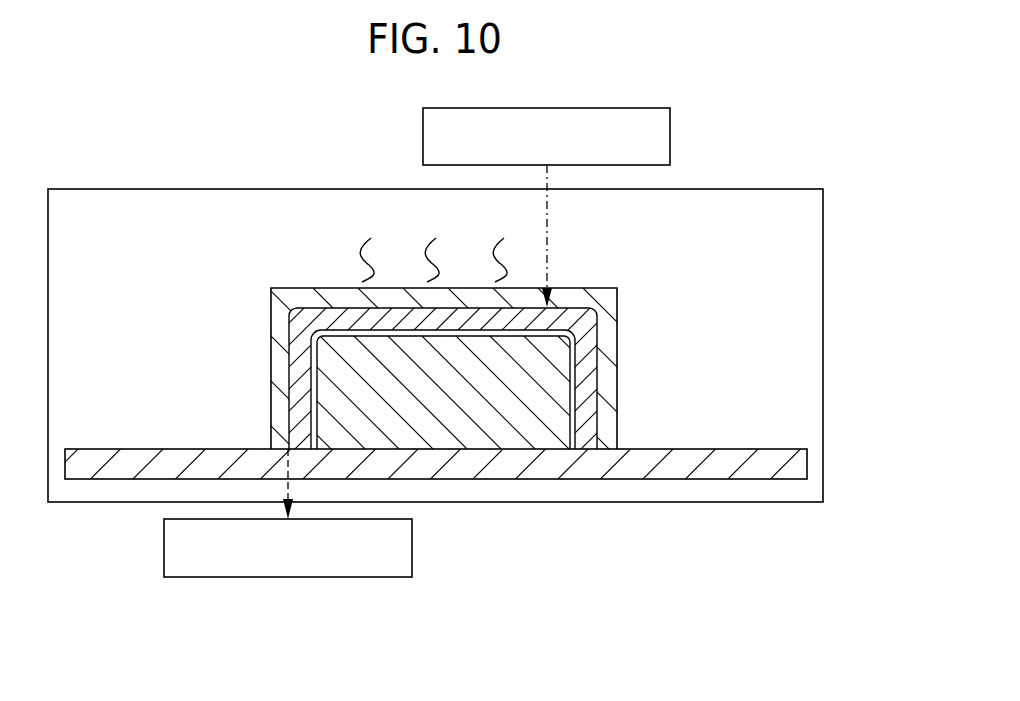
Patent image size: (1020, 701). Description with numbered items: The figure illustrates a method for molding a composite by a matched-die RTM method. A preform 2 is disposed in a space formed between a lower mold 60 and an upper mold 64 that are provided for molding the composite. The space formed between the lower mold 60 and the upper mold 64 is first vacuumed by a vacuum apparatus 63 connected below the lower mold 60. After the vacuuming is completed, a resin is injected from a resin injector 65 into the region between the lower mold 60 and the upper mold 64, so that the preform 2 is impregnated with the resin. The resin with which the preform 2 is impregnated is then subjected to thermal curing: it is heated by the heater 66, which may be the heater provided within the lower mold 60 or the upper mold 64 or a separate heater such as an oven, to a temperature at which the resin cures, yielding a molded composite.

The preform 2 is at (290, 352).
The lower mold 60 is at (467, 470).
The vacuum apparatus 63 is at (164, 547).
The upper mold 64 is at (617, 329).
The resin injector 65 is at (671, 137).
The heater 66 is at (755, 503).